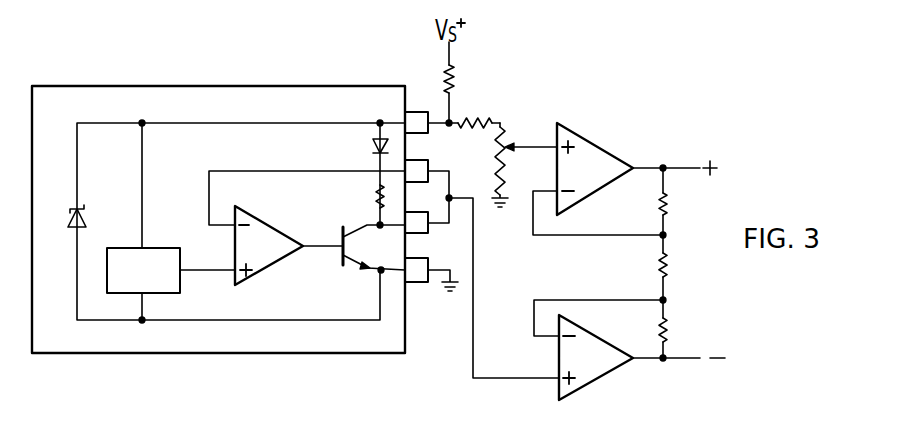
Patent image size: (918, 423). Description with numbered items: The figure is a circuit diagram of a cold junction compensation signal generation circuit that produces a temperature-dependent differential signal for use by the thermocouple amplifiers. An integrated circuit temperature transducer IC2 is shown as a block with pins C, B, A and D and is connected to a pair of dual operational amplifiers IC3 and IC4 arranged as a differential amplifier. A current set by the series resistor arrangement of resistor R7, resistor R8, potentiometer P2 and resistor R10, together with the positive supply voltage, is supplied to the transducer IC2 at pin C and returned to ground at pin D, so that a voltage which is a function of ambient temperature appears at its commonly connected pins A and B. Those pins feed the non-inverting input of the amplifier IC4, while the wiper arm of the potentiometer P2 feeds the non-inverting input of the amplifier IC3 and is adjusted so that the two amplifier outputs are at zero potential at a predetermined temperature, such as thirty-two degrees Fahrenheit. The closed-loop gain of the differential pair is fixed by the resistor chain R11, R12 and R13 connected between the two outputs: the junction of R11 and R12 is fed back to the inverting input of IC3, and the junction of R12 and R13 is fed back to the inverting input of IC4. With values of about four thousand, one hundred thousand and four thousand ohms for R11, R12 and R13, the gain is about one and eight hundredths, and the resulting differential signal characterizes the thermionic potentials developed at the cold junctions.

The integrated circuit temperature transducer IC2 is at (236, 86).
The operational amplifier IC3 is at (578, 138).
The operational amplifier IC4 is at (596, 378).
The series resistor R7 is at (444, 80).
The series resistor R8 is at (468, 115).
The series resistor R10 is at (498, 183).
The gain resistor R11 is at (657, 203).
The gain resistor R12 is at (658, 268).
The gain resistor R13 is at (658, 330).
The potentiometer P2 is at (507, 134).